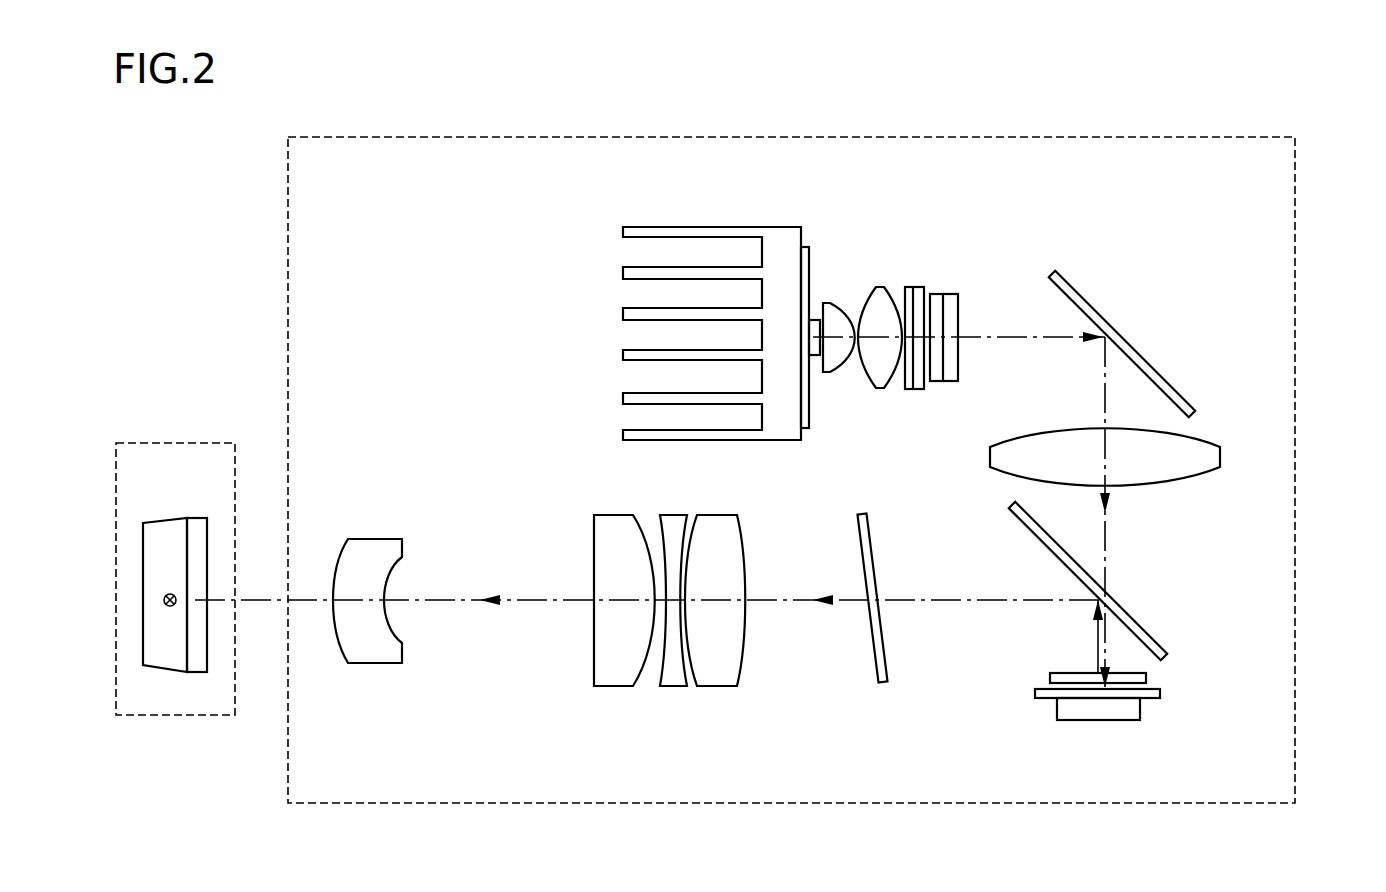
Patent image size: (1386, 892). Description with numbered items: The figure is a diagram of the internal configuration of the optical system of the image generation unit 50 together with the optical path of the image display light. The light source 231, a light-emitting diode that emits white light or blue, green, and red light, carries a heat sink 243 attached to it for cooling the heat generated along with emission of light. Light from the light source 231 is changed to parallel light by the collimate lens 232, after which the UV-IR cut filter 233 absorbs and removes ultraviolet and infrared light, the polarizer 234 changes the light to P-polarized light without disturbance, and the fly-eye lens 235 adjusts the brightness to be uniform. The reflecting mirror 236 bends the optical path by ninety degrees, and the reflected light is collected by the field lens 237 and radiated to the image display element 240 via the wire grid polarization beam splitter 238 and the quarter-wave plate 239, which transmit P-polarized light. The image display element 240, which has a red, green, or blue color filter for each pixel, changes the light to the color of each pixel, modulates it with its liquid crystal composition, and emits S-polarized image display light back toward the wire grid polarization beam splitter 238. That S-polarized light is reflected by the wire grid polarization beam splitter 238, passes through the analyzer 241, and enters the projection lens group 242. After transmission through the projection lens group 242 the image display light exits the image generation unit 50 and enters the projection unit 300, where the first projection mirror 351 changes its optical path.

The image generation unit 50 is at (1296, 172).
The projection unit 300 is at (207, 443).
The first projection mirror 351 is at (163, 528).
The light source 231 is at (814, 322).
The collimate lens 232 is at (840, 317).
The UV-IR cut filter 233 is at (910, 290).
The polarizer 234 is at (926, 300).
The fly-eye lens 235 is at (947, 300).
The reflecting mirror 236 is at (1168, 386).
The field lens 237 is at (1207, 453).
The wire grid polarization beam splitter 238 is at (1150, 635).
The quarter-wave plate 239 is at (1146, 676).
The image display element 240 is at (1125, 713).
The analyzer 241 is at (878, 660).
The projection lens group 242 is at (747, 703).
The heat sink 243 is at (779, 240).